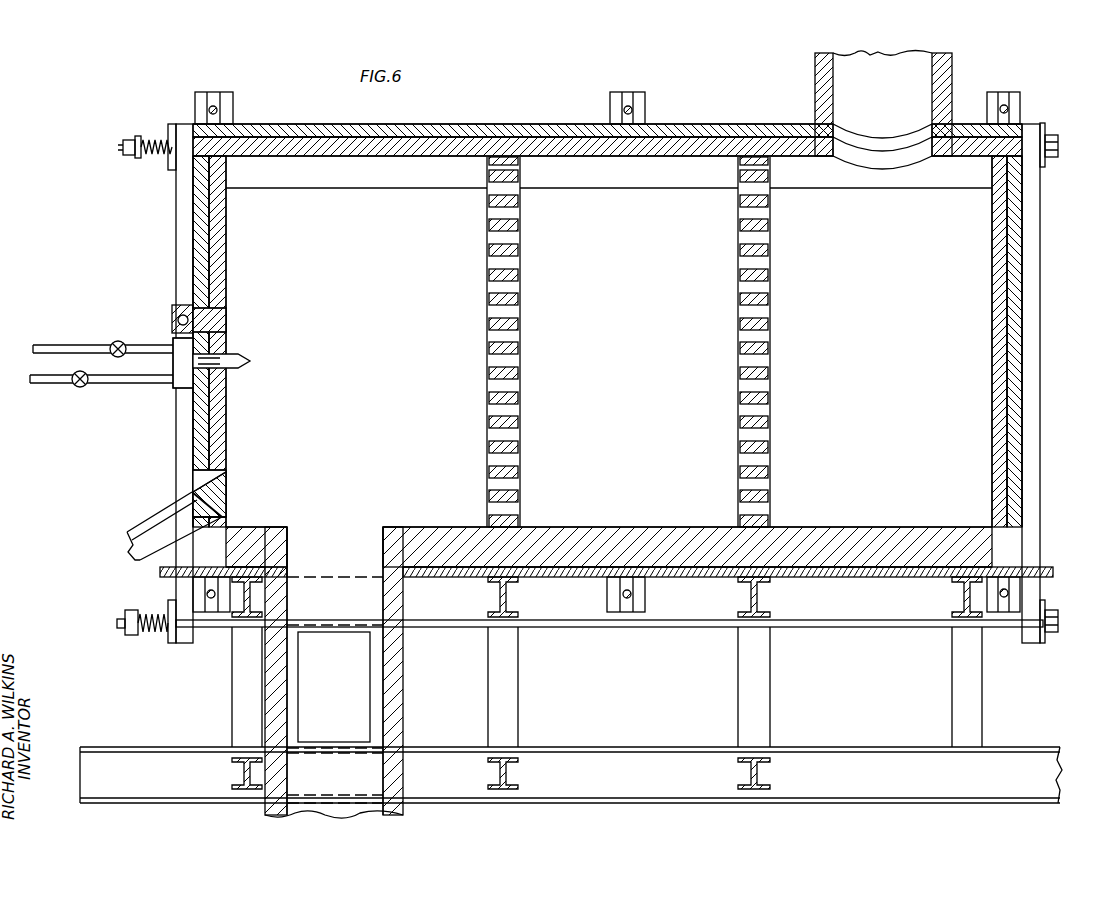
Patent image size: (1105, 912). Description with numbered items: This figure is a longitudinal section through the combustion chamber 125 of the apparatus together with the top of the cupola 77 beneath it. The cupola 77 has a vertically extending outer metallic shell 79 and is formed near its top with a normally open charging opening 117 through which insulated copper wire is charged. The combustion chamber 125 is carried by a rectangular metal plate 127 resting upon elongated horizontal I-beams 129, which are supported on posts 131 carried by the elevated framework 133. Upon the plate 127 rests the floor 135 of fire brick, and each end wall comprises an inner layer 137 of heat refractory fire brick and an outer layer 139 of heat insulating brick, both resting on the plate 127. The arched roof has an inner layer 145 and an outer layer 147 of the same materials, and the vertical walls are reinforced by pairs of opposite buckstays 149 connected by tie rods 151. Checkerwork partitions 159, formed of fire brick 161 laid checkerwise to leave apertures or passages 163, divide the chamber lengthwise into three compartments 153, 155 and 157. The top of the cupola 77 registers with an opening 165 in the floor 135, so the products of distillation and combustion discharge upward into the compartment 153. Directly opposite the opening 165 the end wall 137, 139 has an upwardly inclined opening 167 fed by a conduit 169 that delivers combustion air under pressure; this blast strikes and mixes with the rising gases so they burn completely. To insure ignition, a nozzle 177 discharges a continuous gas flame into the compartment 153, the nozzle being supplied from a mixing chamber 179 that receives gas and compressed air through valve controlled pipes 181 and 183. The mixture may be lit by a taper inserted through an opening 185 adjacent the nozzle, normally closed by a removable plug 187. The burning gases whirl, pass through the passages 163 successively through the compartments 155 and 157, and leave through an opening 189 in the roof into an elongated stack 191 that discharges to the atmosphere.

The cupola 77 is at (360, 672).
The outer metallic shell 79 is at (403, 662).
The charging opening 117 is at (372, 696).
The combustion chamber 125 is at (1040, 300).
The rectangular metal plate 127 is at (545, 570).
The horizontal I-beams 129 is at (487, 596).
The posts 131 is at (528, 702).
The elevated framework 133 is at (589, 747).
The floor 135 is at (598, 528).
The inner layer of end wall 137 is at (233, 268).
The outer layer of end wall 139 is at (192, 243).
The inner layer of roof 145 is at (346, 146).
The outer layer of roof 147 is at (424, 130).
The buckstays 149 is at (194, 102).
The tie rods 151 is at (214, 106).
The first compartment 153 is at (410, 232).
The second compartment 155 is at (664, 232).
The third compartment 157 is at (908, 232).
The partitions 159 is at (628, 342).
The fire brick 161 is at (520, 252).
The apertures or passages 163 is at (508, 222).
The opening in combustion chamber floor 165 is at (290, 545).
The upwardly inclined opening 167 is at (230, 488).
The conduit 169 is at (160, 520).
The nozzle 177 is at (246, 356).
The mixing chamber 179 is at (177, 388).
The gas pipe 181 is at (100, 390).
The compressed air pipe 183 is at (74, 342).
The opening 185 is at (228, 310).
The removable plug 187 is at (170, 306).
The opening in roof 189 is at (858, 146).
The stack 191 is at (950, 80).